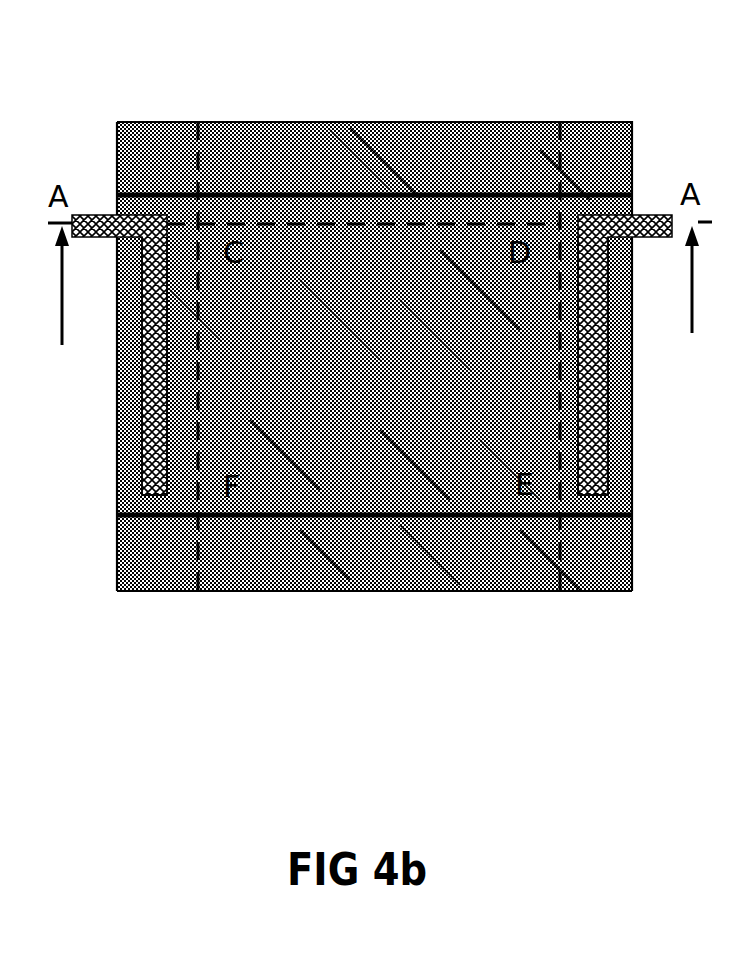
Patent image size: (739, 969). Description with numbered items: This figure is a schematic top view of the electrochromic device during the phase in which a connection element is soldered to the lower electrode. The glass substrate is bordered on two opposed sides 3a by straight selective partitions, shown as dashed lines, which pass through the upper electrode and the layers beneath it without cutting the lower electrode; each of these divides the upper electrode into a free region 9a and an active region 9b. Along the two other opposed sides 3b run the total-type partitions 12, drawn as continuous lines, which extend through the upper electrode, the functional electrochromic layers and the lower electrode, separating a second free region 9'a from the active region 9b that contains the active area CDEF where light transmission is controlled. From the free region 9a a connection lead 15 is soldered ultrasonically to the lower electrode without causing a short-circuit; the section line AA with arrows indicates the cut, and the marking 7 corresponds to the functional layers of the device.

The opposed sides of the glass substrate 3a is at (115, 140).
The other opposed sides of the substrate 3b is at (587, 122).
The second free region 9'a is at (374, 343).
The free region 9a is at (130, 422).
The active region 9b is at (272, 548).
The partitions 12 is at (280, 195).
The connection lead 15 is at (145, 458).
The section arrow 7 is at (0, 178).